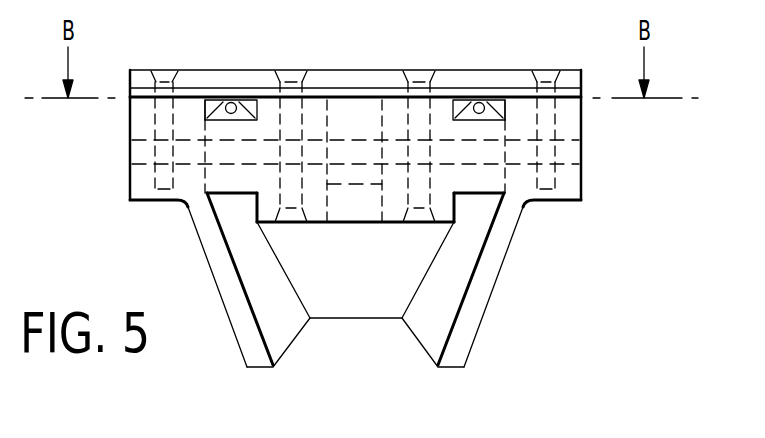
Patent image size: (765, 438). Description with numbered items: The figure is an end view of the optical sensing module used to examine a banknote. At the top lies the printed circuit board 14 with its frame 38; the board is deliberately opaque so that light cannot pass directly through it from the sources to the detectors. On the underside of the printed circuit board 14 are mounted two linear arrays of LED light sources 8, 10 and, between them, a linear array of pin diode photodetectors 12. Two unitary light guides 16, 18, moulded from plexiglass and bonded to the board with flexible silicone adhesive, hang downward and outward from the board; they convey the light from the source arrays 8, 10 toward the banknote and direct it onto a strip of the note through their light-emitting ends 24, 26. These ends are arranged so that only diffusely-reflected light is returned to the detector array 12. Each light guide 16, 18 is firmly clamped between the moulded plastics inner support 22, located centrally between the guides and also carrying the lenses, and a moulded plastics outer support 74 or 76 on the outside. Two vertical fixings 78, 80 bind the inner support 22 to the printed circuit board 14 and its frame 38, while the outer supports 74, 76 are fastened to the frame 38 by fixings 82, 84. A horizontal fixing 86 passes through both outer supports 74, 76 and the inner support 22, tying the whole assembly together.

The light source array 8 is at (231, 100).
The light source array 10 is at (481, 100).
The photodetector array 12 is at (355, 110).
The printed circuit board 14 is at (128, 98).
The light guide 16 is at (240, 241).
The light guide 18 is at (473, 252).
The inner support 22 is at (402, 288).
The light-emitting end 24 is at (287, 349).
The light-emitting end 26 is at (422, 350).
The printed circuit board frame 38 is at (137, 80).
The outer support 74 is at (200, 209).
The outer support 76 is at (508, 215).
The vertical fixing 78 is at (293, 67).
The vertical fixing 80 is at (418, 67).
The fixing 82 is at (164, 68).
The fixing 84 is at (547, 67).
The horizontal fixing 86 is at (135, 147).